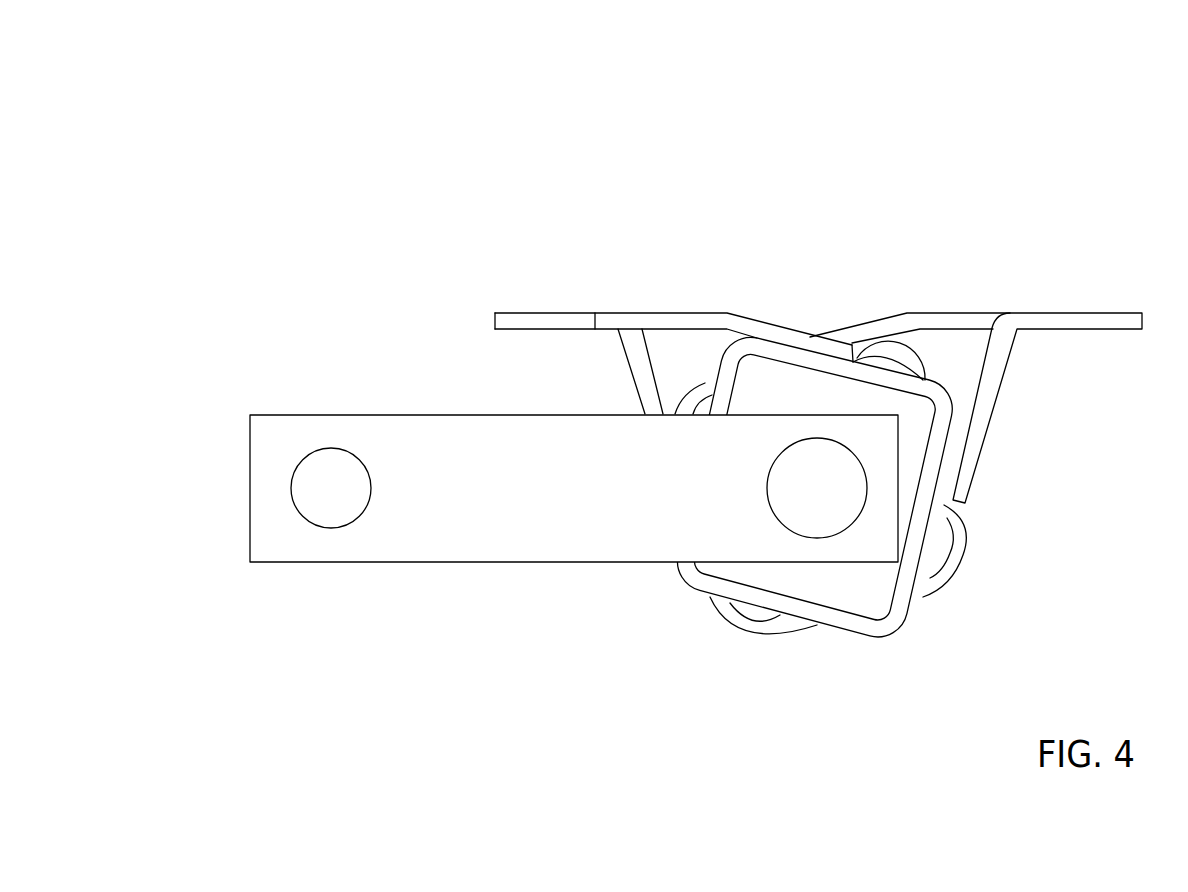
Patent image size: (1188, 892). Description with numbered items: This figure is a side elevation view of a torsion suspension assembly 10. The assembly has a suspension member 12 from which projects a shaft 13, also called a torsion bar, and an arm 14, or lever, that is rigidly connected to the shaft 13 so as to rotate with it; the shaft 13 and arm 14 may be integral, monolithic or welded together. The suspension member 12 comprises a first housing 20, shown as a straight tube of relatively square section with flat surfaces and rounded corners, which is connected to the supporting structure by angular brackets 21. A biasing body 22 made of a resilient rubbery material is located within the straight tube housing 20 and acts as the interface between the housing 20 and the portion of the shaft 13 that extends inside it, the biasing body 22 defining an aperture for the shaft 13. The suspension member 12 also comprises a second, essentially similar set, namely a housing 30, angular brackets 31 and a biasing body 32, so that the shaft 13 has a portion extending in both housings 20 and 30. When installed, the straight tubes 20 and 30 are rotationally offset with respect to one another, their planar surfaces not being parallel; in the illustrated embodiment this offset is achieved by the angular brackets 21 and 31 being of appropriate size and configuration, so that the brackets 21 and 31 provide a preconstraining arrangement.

The torsion suspension assembly 10 is at (356, 346).
The suspension member 12 is at (818, 291).
The shaft 13 is at (810, 497).
The arm 14 is at (428, 518).
The housing 20 is at (892, 623).
The angular brackets 21 is at (560, 315).
The biasing body 22 is at (805, 385).
The housing 30 is at (953, 565).
The angular brackets 31 is at (972, 317).
The biasing body 32 is at (890, 368).